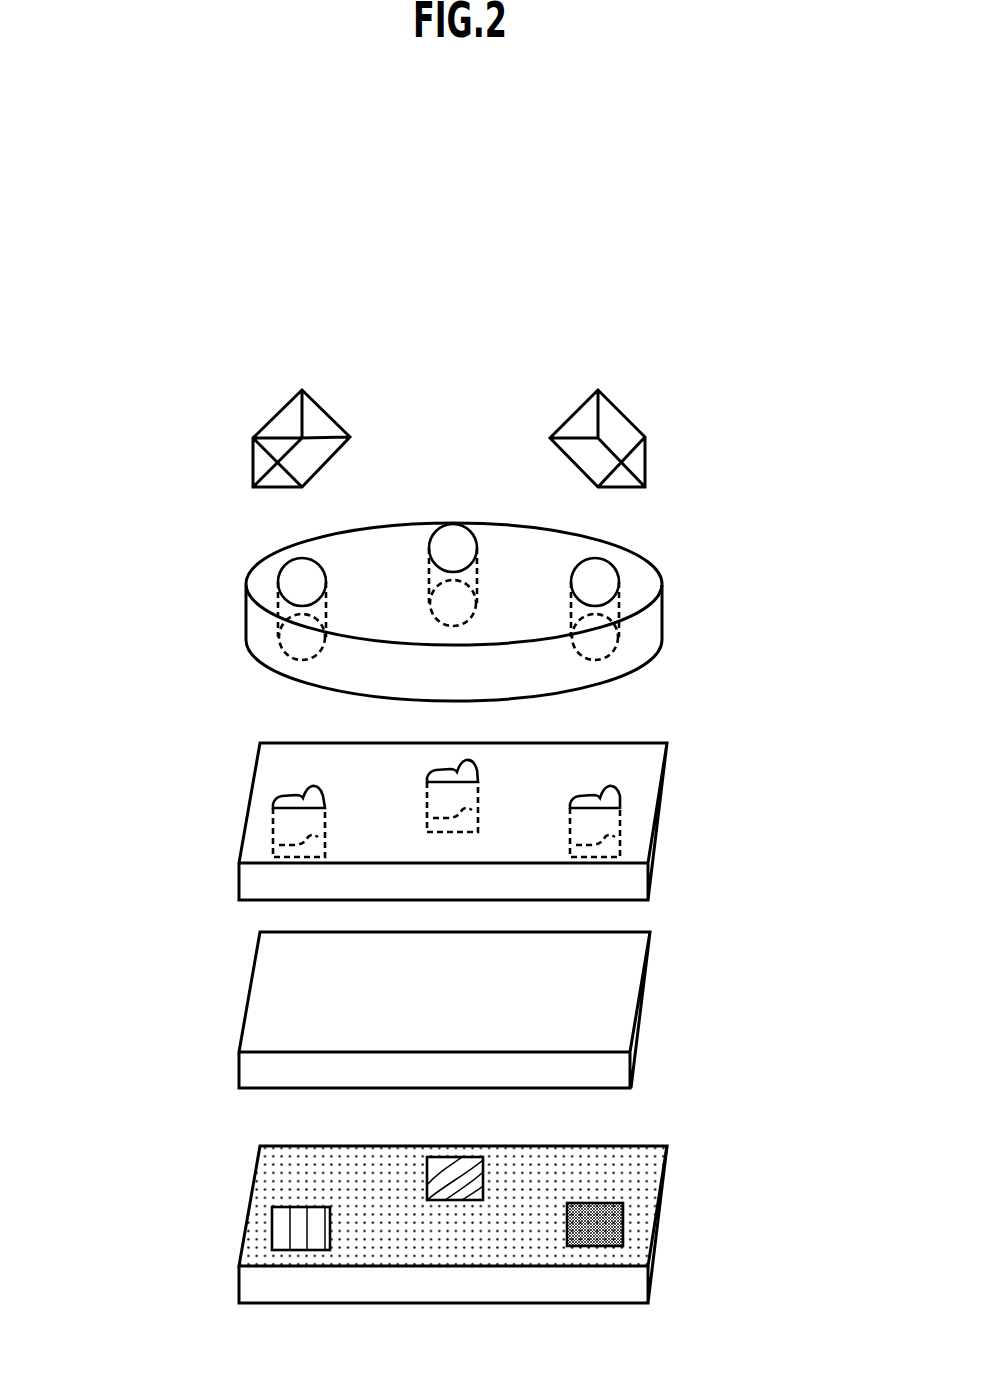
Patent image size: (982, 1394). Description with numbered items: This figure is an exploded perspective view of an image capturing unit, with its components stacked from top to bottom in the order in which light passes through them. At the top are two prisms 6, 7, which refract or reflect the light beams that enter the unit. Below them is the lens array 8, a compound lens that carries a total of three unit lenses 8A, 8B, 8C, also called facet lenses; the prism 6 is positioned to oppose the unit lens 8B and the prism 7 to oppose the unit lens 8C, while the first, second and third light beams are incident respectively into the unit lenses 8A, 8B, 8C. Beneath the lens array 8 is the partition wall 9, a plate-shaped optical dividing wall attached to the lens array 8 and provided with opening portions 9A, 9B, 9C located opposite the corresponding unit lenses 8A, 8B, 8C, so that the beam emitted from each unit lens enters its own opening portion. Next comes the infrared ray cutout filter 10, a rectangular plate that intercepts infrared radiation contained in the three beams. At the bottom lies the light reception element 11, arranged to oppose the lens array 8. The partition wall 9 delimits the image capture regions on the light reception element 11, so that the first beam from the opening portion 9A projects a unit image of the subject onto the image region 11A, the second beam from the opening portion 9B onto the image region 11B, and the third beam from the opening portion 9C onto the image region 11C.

The prism 6 is at (285, 433).
The prism 7 is at (625, 430).
The lens array 8 is at (617, 555).
The unit lens 8A is at (460, 582).
The unit lens 8B is at (302, 635).
The unit lens 8C is at (595, 613).
The partition wall 9 is at (642, 787).
The opening portion 9A is at (430, 778).
The opening portion 9B is at (302, 805).
The opening portion 9C is at (595, 800).
The infrared ray cutout filter 10 is at (627, 1027).
The light reception element 11 is at (648, 1183).
The image region 11A is at (483, 1163).
The image region 11B is at (302, 1238).
The image region 11C is at (593, 1240).